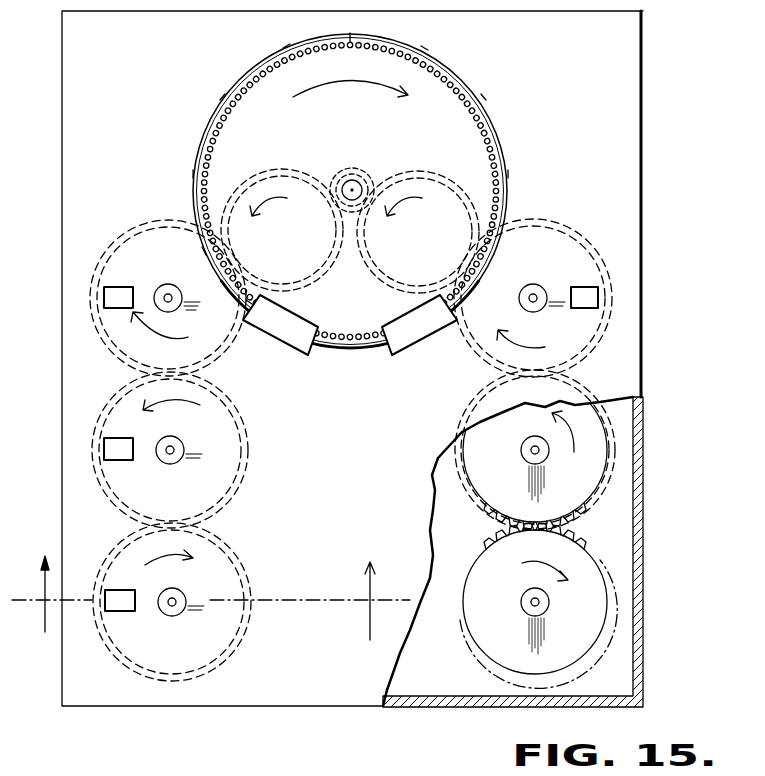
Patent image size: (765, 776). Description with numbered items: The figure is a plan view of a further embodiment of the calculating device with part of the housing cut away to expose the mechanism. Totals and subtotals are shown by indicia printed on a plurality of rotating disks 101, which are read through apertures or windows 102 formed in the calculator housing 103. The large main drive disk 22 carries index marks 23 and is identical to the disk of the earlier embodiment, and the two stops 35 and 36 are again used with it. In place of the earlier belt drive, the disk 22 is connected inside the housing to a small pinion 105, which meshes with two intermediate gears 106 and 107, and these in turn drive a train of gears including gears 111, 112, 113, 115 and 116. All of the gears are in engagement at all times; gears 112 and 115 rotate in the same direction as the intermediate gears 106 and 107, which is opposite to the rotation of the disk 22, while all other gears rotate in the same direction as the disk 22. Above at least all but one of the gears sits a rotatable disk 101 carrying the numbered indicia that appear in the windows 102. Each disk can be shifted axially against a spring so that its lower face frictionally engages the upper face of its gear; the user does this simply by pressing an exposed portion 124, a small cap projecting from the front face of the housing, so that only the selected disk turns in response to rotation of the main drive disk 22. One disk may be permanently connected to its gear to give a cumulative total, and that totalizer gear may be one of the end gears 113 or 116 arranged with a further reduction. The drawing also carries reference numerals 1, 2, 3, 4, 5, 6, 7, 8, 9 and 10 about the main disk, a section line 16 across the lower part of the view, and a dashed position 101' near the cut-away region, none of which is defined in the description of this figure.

The rotary disc 1 is at (497, 243).
The disc rim portion 2 is at (508, 172).
The disc rim portion 3 is at (486, 101).
The disc rim portion 4 is at (427, 51).
The disc index mark 5 is at (350, 33).
The disc rim portion 6 is at (283, 48).
The disc rim portion 7 is at (221, 100).
The disc rim portion 8 is at (193, 171).
The disc rim portion 9 is at (203, 247).
The disc rim portion 10 is at (246, 302).
The disk 22 is at (494, 131).
The index marks 23 is at (500, 148).
The stop 35 is at (423, 330).
The stop 36 is at (277, 330).
The rotating disk 101 is at (540, 388).
The counter wheel alternate position 101' is at (431, 450).
The window 102 is at (118, 460).
The calculator housing 103 is at (643, 222).
The pinion 105 is at (372, 171).
The intermediate gear 106 is at (245, 175).
The intermediate gear 107 is at (440, 174).
The gear 111 is at (110, 245).
The gear 112 is at (252, 455).
The gear 113 is at (245, 555).
The gear 115 is at (472, 490).
The gear 116 is at (470, 628).
The exposed portion 124 is at (535, 287).
The section line 16- 16 is at (211, 610).